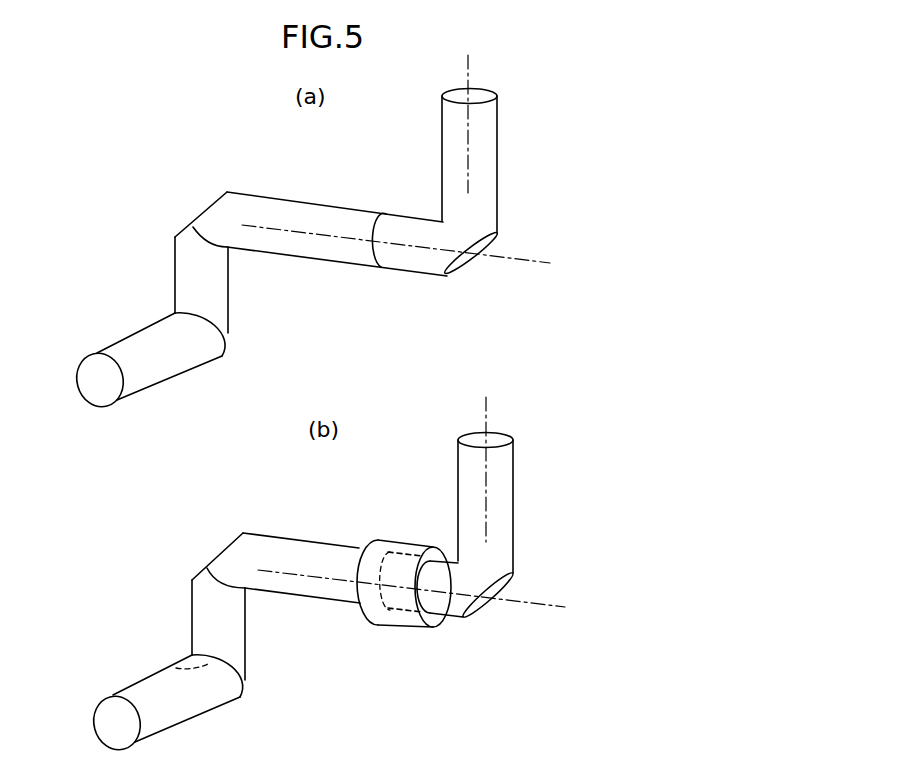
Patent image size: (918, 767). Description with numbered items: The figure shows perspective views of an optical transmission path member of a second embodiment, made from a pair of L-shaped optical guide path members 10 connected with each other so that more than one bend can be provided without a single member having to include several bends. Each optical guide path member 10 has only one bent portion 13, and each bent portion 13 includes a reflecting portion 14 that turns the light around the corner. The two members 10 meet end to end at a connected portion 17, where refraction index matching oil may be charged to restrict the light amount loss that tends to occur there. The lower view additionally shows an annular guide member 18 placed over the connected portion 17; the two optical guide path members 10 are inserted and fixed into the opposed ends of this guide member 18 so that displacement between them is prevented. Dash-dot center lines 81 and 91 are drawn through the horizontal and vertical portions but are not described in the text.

The optical guide path member 10 is at (177, 267).
The bent portion 13 is at (187, 307).
The reflecting portion 14 is at (200, 208).
The connected portion 17 is at (377, 227).
The annular guide member 18 is at (410, 623).
The horizontal pipe axis 81 is at (518, 258).
The vertical pipe axis 91 is at (468, 72).